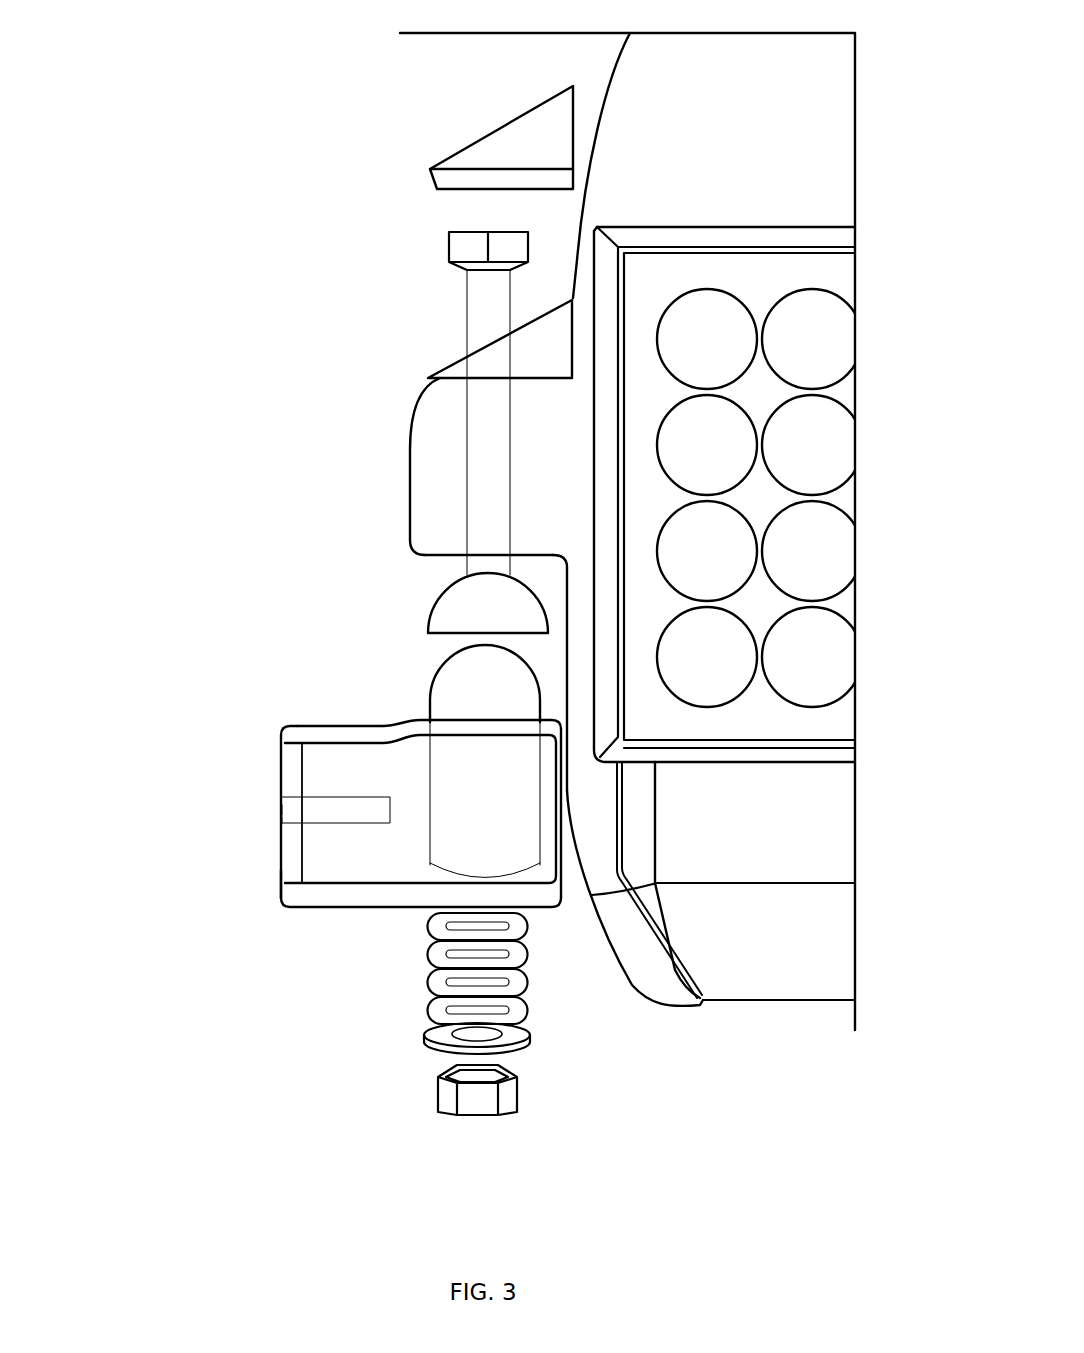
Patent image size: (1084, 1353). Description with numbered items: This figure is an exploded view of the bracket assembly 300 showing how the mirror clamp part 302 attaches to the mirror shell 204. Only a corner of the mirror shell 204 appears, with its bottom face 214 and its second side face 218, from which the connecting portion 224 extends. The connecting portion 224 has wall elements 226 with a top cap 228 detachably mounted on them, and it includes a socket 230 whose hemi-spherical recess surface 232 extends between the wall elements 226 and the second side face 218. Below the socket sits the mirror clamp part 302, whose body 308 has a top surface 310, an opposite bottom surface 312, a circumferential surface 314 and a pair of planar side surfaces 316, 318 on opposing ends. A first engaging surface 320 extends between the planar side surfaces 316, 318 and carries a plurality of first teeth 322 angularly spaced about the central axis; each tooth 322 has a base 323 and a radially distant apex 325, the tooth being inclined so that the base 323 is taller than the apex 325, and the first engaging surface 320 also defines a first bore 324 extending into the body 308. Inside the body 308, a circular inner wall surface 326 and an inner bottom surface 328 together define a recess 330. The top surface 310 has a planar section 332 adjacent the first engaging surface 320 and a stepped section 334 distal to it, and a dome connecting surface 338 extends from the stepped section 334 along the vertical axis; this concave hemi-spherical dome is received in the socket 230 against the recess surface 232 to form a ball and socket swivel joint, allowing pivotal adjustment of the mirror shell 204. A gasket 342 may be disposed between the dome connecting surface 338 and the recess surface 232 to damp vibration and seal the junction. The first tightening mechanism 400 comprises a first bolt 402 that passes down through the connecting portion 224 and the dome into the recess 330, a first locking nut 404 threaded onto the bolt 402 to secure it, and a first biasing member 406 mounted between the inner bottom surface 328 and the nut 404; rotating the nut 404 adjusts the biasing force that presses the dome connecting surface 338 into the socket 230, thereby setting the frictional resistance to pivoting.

The mirror shell 204 is at (613, 62).
The bottom face 214 is at (800, 1000).
The second side face 218 is at (578, 222).
The connecting portion 224 is at (389, 387).
The wall elements 226 is at (401, 584).
The top cap 228 is at (472, 130).
The socket 230 is at (510, 500).
The recess surface 232 is at (470, 497).
The bracket assembly 300 is at (372, 908).
The mirror clamp part 302 is at (316, 815).
The body 308 is at (309, 811).
The top surface 310 is at (435, 806).
The bottom surface 312 is at (298, 908).
The circumferential surface 314 is at (657, 765).
The planar side surface 316 is at (367, 748).
The planar side surface 318 is at (322, 727).
The first engaging surface 320 is at (279, 877).
The first teeth 322 is at (279, 765).
The base 323 is at (277, 778).
The first bore 324 is at (310, 829).
The apex 325 is at (278, 827).
The circular inner wall surface 326 is at (673, 775).
The inner bottom surface 328 is at (563, 797).
The recess 330 is at (523, 853).
The planar section 332 is at (330, 738).
The stepped section 334 is at (520, 760).
The dome connecting surface 338 is at (543, 700).
The gasket 342 is at (547, 617).
The first tightening mechanism 400 is at (384, 362).
The first bolt 402 is at (510, 300).
The first locking nut 404 is at (517, 1107).
The first biasing member 406 is at (530, 1003).